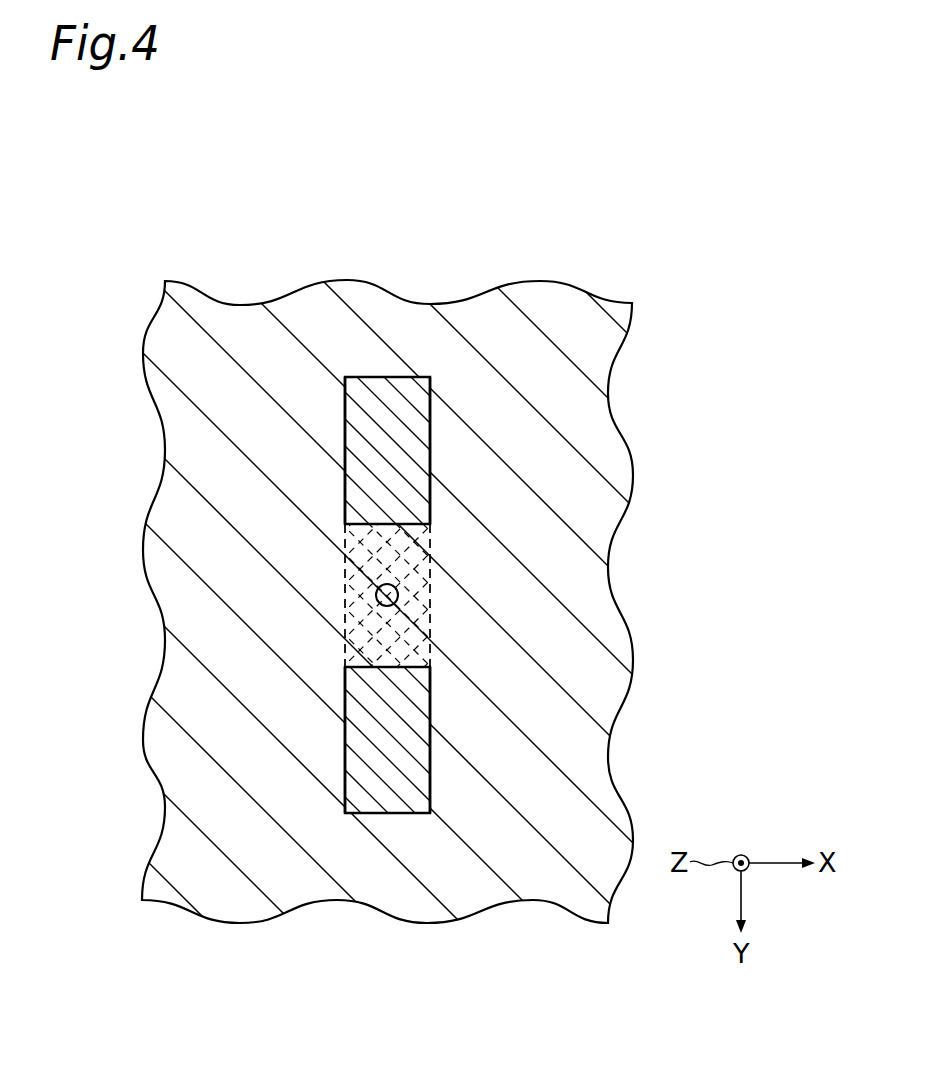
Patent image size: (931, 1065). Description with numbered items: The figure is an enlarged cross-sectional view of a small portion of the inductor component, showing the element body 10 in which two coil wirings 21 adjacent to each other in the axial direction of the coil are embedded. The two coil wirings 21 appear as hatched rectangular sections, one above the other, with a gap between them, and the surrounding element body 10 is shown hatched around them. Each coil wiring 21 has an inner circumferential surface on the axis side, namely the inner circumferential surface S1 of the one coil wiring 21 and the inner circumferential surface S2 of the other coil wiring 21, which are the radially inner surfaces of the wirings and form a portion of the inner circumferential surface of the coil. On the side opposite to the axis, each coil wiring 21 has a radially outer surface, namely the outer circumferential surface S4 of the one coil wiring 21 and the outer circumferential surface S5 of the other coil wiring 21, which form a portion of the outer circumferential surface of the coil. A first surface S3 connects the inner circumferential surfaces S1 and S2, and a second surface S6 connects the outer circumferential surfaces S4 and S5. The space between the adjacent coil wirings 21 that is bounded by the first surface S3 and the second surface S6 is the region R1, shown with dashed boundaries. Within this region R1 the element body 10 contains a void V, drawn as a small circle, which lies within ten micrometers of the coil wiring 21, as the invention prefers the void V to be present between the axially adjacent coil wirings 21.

The element body 10 is at (552, 316).
The coil wiring 21 is at (345, 450).
The region R1 is at (413, 547).
The void V is at (398, 593).
The inner circumferential surface S1 is at (430, 448).
The inner circumferential surface S2 is at (430, 742).
The first surface S3 is at (430, 546).
The outer circumferential surface S4 is at (345, 398).
The outer circumferential surface S5 is at (345, 775).
The second surface S6 is at (345, 597).